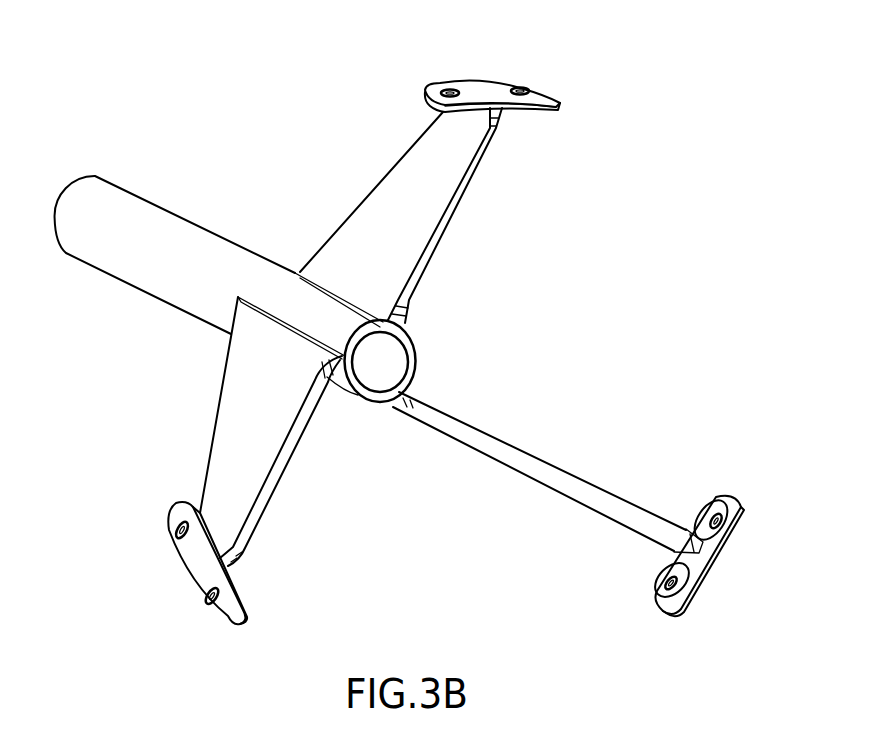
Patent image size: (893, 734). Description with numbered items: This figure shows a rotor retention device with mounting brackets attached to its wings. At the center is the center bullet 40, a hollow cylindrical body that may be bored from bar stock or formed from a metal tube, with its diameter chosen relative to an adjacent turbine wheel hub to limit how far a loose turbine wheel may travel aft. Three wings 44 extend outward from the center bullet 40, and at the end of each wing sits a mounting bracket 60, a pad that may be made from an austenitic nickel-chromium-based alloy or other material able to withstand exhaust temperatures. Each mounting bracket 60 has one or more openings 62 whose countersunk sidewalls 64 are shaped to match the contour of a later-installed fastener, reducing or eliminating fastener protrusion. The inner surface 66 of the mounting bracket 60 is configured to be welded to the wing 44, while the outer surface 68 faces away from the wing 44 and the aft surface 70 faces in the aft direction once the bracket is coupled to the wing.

The center bullet 40 is at (165, 220).
The wings 44 is at (433, 205).
The mounting bracket 60 is at (480, 103).
The openings 62 is at (675, 583).
The countersunk sidewalls 64 is at (703, 523).
The inner surface 66 is at (693, 530).
The outer surface 68 is at (500, 87).
The aft surface 70 is at (528, 107).